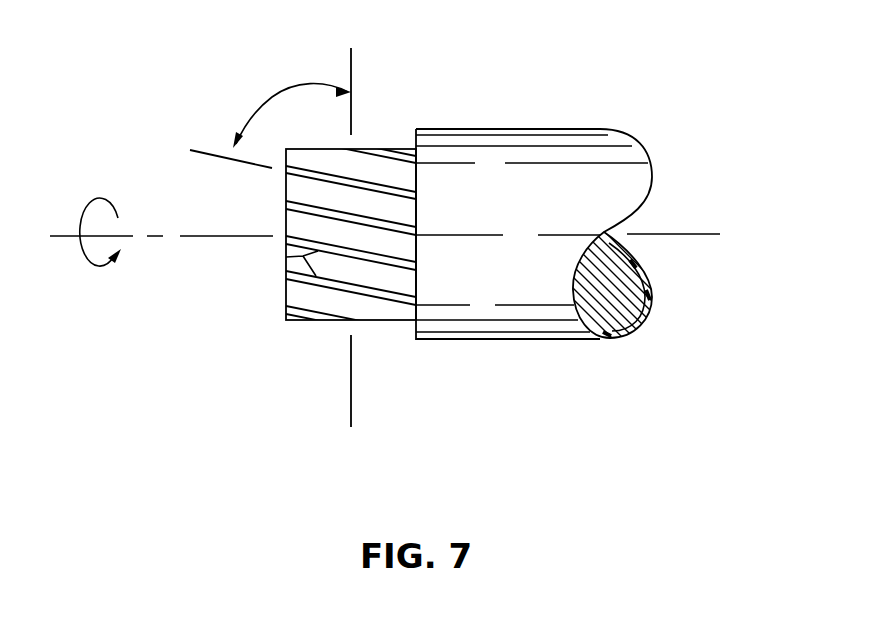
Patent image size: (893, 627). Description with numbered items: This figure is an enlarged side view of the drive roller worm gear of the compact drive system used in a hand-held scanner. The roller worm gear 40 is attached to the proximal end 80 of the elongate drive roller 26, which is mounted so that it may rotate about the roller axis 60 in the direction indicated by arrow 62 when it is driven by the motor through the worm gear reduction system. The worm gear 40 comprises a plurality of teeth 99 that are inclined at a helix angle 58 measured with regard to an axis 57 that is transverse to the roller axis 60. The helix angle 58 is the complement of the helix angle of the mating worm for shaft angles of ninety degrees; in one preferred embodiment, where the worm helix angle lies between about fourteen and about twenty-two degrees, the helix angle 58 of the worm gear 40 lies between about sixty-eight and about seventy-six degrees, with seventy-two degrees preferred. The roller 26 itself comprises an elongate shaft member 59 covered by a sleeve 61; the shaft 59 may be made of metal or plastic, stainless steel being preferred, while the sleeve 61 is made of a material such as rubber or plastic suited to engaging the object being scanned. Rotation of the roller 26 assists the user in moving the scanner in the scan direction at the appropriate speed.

The elongate roller assembly 26 is at (538, 126).
The roller worm gear 40 is at (290, 323).
The axis transverse to the roller axis 57 is at (353, 63).
The helix angle 58 is at (278, 100).
The elongate shaft member 59 is at (613, 303).
The roller axis 60 is at (735, 233).
The sleeve 61 is at (623, 343).
The arrow indicating direction of rotation 62 is at (92, 272).
The proximal end of drive roller 80 is at (442, 340).
The teeth 99 is at (286, 257).